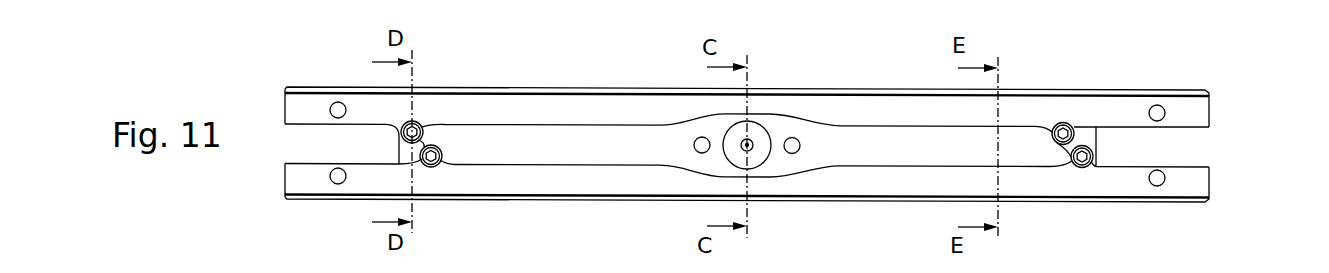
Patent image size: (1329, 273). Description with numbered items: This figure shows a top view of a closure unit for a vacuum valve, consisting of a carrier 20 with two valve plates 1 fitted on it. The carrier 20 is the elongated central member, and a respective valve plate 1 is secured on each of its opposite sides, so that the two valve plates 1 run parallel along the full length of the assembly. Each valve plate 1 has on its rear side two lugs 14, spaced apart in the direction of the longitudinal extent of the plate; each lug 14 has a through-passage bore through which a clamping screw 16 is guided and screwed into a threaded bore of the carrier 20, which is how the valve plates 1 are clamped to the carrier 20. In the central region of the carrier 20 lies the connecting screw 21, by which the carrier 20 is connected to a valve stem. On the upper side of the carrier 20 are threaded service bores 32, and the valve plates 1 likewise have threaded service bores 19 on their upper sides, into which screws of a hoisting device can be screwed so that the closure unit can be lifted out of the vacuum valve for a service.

The valve plate 1 is at (1229, 106).
The lug 14 is at (446, 152).
The clamping screw 16 is at (424, 115).
The threaded service bore 19 is at (334, 106).
The carrier 20 is at (1115, 143).
The connecting screw 21 is at (758, 137).
The threaded service bore 32 is at (697, 138).